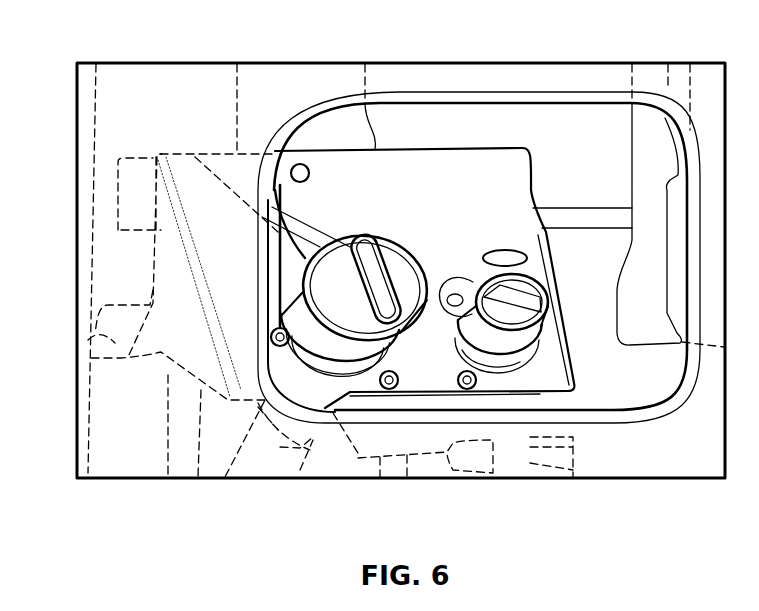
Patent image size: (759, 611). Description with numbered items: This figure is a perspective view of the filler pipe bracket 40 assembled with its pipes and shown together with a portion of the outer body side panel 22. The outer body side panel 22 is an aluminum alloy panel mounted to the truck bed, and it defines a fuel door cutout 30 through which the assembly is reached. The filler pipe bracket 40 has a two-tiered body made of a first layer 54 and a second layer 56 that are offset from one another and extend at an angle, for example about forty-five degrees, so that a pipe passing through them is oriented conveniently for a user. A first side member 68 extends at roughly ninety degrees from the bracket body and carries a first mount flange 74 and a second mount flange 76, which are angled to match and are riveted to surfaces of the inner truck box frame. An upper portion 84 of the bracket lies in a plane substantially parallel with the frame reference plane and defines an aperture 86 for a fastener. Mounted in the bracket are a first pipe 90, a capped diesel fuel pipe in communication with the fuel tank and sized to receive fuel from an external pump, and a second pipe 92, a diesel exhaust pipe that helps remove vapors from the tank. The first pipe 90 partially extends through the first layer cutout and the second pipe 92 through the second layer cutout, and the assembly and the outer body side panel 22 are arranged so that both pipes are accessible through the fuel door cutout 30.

The outer body side panel 22 is at (662, 86).
The fuel door cutout 30 is at (624, 104).
The filler pipe bracket 40 is at (475, 195).
The first layer 54 is at (537, 262).
The second layer 56 is at (303, 260).
The first side member 68 is at (155, 353).
The first mount flange 74 is at (88, 340).
The second mount flange 76 is at (136, 205).
The upper portion 84 is at (415, 177).
The aperture 86 is at (295, 164).
The first pipe 90 is at (340, 352).
The second pipe 92 is at (497, 363).